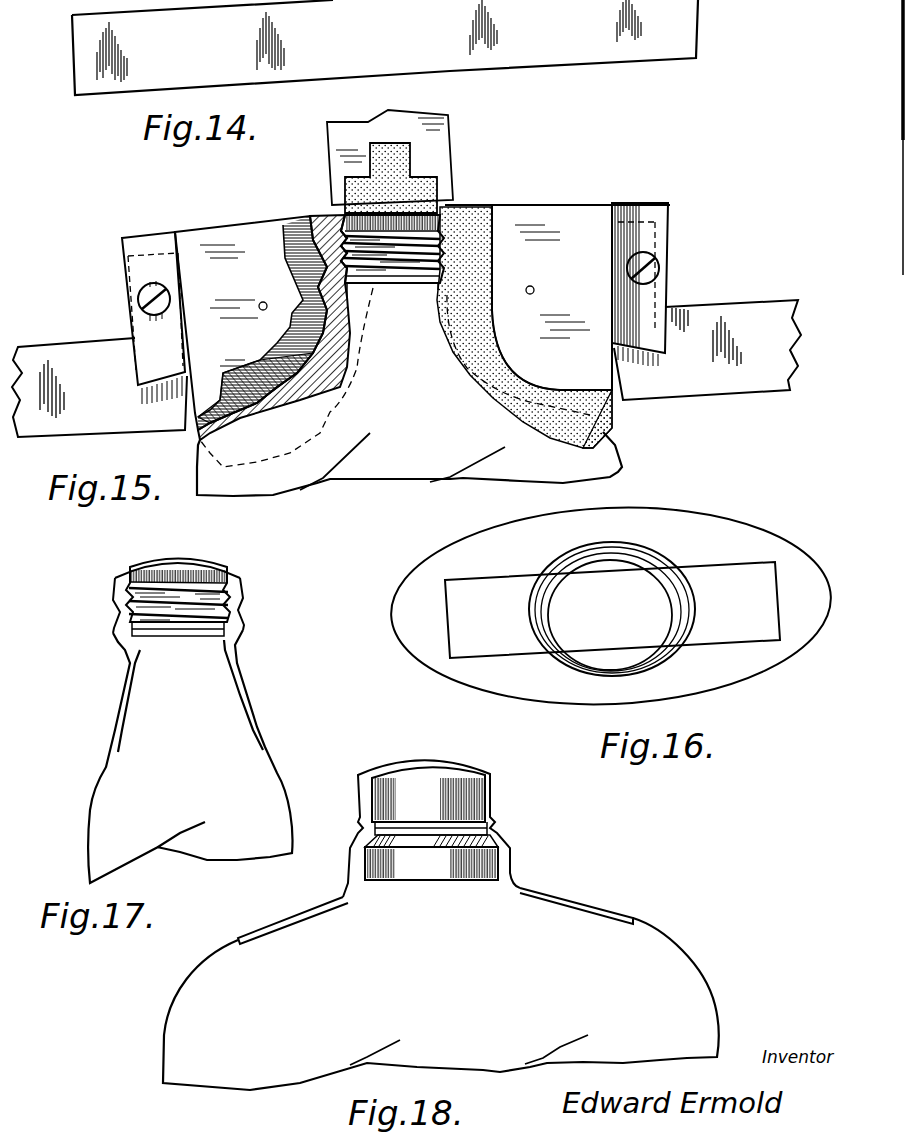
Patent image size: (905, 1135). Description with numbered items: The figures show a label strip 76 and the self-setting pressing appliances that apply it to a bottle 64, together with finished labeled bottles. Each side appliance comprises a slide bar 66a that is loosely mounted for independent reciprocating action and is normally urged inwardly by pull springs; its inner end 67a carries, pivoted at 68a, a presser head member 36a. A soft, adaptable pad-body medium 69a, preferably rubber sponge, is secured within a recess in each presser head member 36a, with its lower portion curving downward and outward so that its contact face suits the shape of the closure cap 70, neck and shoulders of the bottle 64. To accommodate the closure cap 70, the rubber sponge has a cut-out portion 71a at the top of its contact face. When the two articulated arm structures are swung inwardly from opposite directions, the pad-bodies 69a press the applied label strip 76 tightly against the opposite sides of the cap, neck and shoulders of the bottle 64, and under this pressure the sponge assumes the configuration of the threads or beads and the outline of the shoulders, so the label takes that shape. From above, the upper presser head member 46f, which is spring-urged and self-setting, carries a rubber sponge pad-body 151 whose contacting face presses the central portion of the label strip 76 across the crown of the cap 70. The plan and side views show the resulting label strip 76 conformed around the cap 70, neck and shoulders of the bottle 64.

In FIG. 15, the presser head member 36a is at (247, 220).
In FIG. 15, the upper presser head member 46f is at (433, 142).
In FIG. 15, the bottle 64 is at (397, 470).
In FIG. 16, the bottle 64 is at (480, 680).
In FIG. 17, the bottle 64 is at (250, 767).
In FIG. 18, the bottle 64 is at (680, 970).
In FIG. 15, the slide bar 66a is at (33, 363).
In FIG. 15, the inner end of slide bar 67a is at (167, 221).
In FIG. 15, the pivot 68a is at (140, 297).
In FIG. 15, the pad-body medium 69a is at (268, 400).
In FIG. 15, the closure cap 70 is at (328, 218).
In FIG. 16, the closure cap 70 is at (611, 556).
In FIG. 17, the closure cap 70 is at (200, 590).
In FIG. 18, the closure cap 70 is at (470, 794).
In FIG. 15, the cut-out portion 71a is at (447, 207).
In FIG. 14, the label strip 76 is at (560, 58).
In FIG. 15, the label strip 76 is at (347, 333).
In FIG. 16, the label strip 76 is at (723, 568).
In FIG. 18, the label strip 76 is at (503, 862).
In FIG. 15, the plunger insert 151 is at (420, 188).